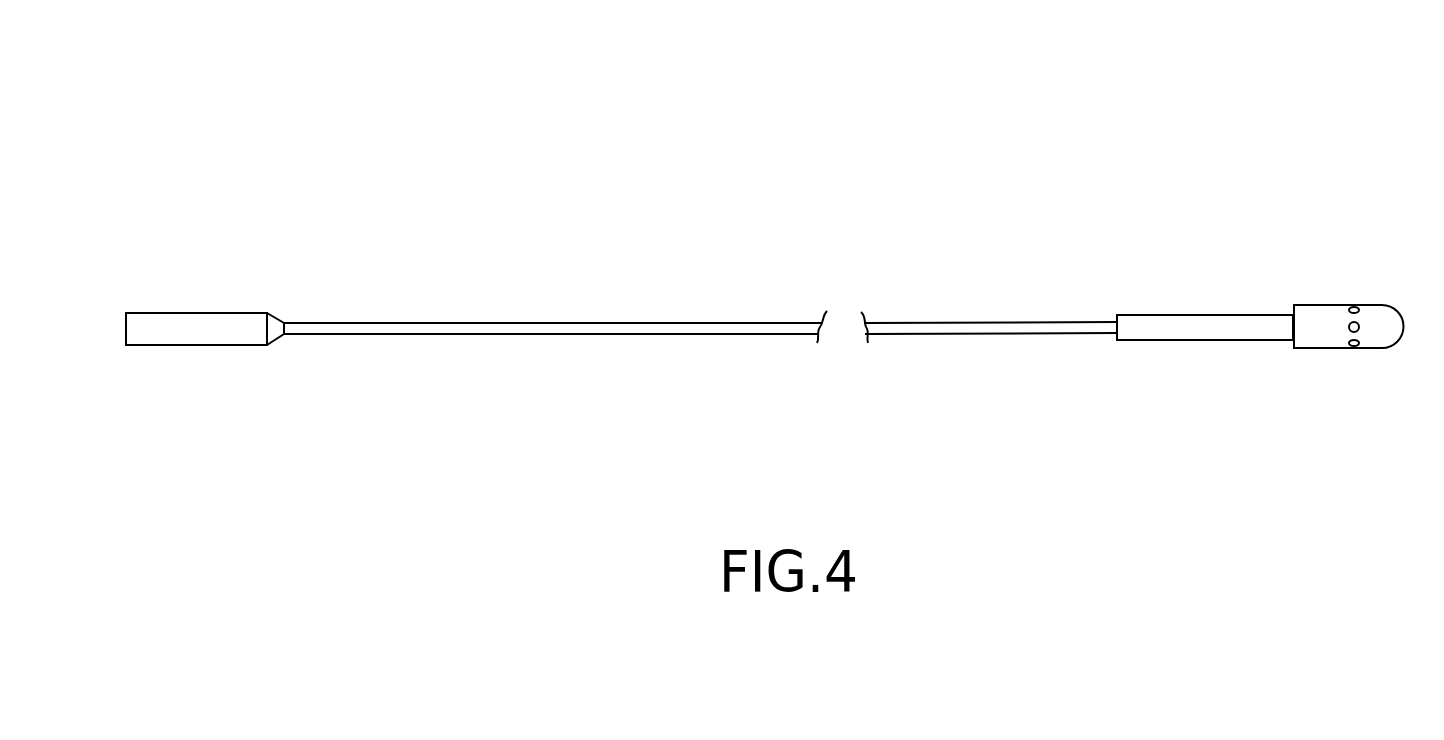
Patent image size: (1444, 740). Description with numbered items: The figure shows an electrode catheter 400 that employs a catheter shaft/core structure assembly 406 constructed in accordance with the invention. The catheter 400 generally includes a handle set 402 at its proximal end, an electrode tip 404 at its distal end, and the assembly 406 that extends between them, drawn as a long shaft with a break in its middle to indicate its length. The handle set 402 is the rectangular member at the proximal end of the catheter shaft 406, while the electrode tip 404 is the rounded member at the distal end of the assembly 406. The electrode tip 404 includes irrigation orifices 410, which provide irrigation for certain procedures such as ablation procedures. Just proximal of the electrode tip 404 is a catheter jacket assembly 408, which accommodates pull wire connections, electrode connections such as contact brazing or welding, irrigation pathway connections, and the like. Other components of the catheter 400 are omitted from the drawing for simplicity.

The electrode catheter 400 is at (925, 123).
The handle set 402 is at (209, 322).
The electrode tip 404 is at (1319, 310).
The catheter shaft/core structure assembly 406 is at (594, 322).
The catheter jacket assembly 408 is at (1186, 321).
The irrigation orifices 410 is at (1356, 348).